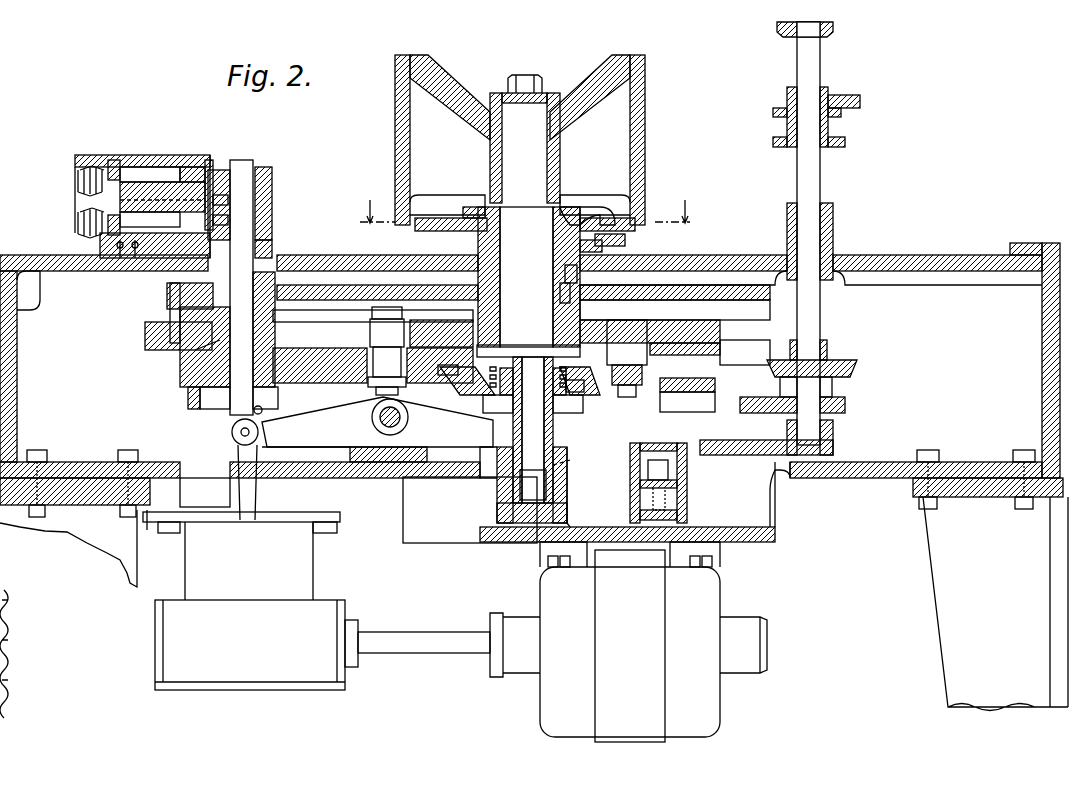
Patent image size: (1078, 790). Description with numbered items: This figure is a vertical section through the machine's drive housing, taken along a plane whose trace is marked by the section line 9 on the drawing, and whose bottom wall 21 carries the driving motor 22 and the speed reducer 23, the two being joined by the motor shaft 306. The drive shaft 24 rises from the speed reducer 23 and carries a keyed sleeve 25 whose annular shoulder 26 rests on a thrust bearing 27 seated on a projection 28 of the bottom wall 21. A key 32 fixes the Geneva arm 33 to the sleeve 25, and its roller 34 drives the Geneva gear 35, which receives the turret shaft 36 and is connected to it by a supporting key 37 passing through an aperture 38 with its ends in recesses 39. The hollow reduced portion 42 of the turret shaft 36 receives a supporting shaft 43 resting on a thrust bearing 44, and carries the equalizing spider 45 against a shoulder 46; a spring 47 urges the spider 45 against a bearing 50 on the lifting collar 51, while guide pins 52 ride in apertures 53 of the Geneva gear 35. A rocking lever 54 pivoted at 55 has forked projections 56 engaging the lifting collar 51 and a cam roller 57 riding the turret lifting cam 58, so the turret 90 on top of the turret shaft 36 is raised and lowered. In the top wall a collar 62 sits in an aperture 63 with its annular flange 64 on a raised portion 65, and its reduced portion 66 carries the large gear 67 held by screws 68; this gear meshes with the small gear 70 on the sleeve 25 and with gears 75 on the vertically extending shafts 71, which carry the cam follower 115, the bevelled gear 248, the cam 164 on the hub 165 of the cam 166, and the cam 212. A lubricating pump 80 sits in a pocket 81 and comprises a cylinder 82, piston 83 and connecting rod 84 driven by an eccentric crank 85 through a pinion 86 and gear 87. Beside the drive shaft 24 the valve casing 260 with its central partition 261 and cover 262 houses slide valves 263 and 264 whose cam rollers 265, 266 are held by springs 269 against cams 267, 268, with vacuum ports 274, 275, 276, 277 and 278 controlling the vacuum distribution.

The bottom wall 21 is at (790, 478).
The driving motor 22 is at (745, 615).
The speed reducer 23 is at (275, 612).
The drive shaft 24 is at (188, 392).
The sleeve 25 is at (225, 340).
The annular shoulder 26 is at (200, 395).
The thrust bearing 27 is at (225, 410).
The projection 28 is at (225, 478).
The key 32 is at (175, 322).
The Geneva arm 33 is at (235, 367).
The roller 34 is at (372, 330).
The Geneva gear 35 is at (700, 355).
The turret shaft 36 is at (588, 262).
The supporting key 37 is at (480, 352).
The aperture 38 is at (515, 305).
The recesses 39 is at (488, 372).
The hollow reduced portion 42 is at (553, 450).
The supporting shaft 43 is at (553, 490).
The thrust bearing 44 is at (497, 505).
The equalizing spider 45 is at (485, 413).
The shoulder 46 is at (568, 395).
The spring 47 is at (498, 395).
The bearing 50 is at (583, 405).
The lifting collar 51 is at (497, 460).
The guide pins 52 is at (630, 350).
The apertures 53 is at (640, 345).
The rocking lever 54 is at (332, 425).
The pivot 55 is at (355, 425).
The forked projections 56 is at (575, 460).
The cam roller 57 is at (245, 522).
The turret lifting cam 58 is at (232, 430).
The collar 62 is at (478, 240).
The aperture 63 is at (560, 220).
The annular flange 64 is at (598, 225).
The raised portion 65 is at (590, 220).
The reduced portion 66 is at (562, 293).
The large gear 67 is at (705, 287).
The screws 68 is at (565, 275).
The small gear 70 is at (290, 272).
The vertically extending shafts 71 is at (822, 62).
The gears 75 is at (865, 262).
The lubricating pump 80 is at (687, 483).
The pocket 81 is at (775, 530).
The cylinder 82 is at (687, 498).
The piston 83 is at (630, 495).
The connecting rod 84 is at (770, 430).
The eccentric crank 85 is at (690, 410).
The pinion 86 is at (810, 398).
The gear 87 is at (857, 372).
The turret 90 is at (550, 75).
The section line 9 is at (526, 200).
The cam follower 115 is at (625, 240).
The cam 164 is at (860, 100).
The hub 165 is at (787, 97).
The cam 166 is at (841, 112).
The cam 212 is at (845, 142).
The bevelled gear 248 is at (835, 32).
The valve casing 260 is at (100, 245).
The central partition 261 is at (183, 175).
The cover 262 is at (125, 167).
The slide valve 263 is at (215, 168).
The slide valve 264 is at (170, 258).
The cam roller 265 is at (212, 160).
The cam roller 266 is at (228, 200).
The cam 267 is at (272, 170).
The cam 268 is at (272, 222).
The springs 269 is at (75, 218).
The vacuum port 274 is at (135, 258).
The vacuum port 275 is at (148, 190).
The vacuum port 276 is at (120, 258).
The vacuum port 277 is at (168, 192).
The vacuum port 278 is at (112, 160).
The motor shaft 306 is at (385, 632).